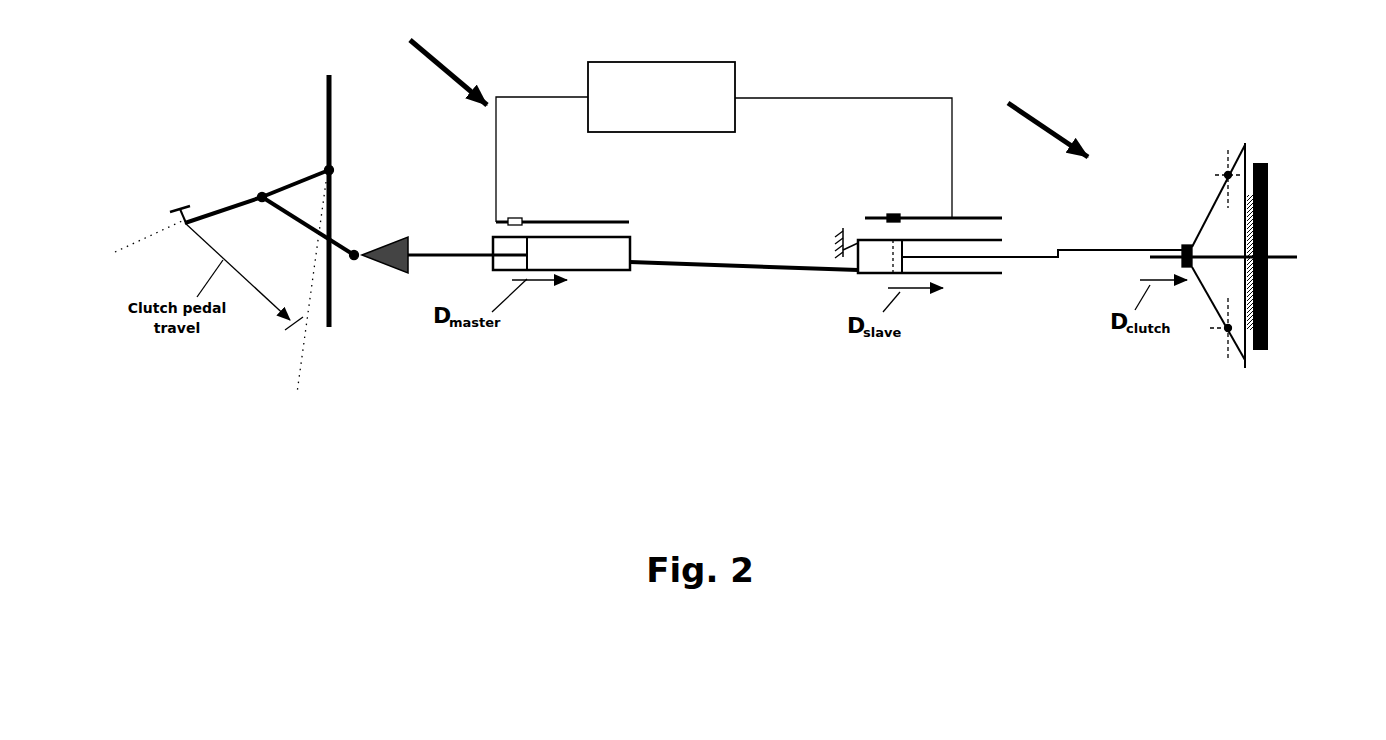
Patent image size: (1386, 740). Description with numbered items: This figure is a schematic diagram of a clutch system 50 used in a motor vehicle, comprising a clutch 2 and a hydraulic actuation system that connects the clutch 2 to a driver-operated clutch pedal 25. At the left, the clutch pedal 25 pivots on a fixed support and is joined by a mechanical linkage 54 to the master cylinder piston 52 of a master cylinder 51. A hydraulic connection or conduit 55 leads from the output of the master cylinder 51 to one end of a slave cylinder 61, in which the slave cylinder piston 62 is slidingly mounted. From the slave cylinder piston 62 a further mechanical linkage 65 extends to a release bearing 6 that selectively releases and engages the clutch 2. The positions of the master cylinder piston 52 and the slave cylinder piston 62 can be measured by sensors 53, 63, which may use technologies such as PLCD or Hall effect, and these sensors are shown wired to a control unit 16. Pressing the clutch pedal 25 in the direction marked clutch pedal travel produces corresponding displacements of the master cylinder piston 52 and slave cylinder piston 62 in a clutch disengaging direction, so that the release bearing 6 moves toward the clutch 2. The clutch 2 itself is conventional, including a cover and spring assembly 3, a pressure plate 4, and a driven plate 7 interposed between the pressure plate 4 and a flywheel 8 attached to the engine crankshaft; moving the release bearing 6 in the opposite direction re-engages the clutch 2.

The clutch 2 is at (1035, 113).
The cover and spring assembly 3 is at (1210, 208).
The pressure plate 4 is at (1245, 367).
The release bearing 6 is at (1183, 242).
The driven plate 7 is at (1253, 327).
The flywheel 8 is at (1270, 307).
The control unit 16 is at (650, 100).
The clutch pedal 25 is at (178, 208).
The clutch system 50 is at (426, 57).
The master cylinder 51 is at (588, 273).
The master cylinder piston 52 is at (527, 248).
The sensor 53 is at (565, 217).
The mechanical linkage 54 is at (382, 262).
The hydraulic connection or conduit 55 is at (718, 272).
The slave cylinder 61 is at (980, 276).
The slave cylinder piston 62 is at (897, 247).
The sensor 63 is at (907, 214).
The mechanical linkage 65 is at (1077, 253).